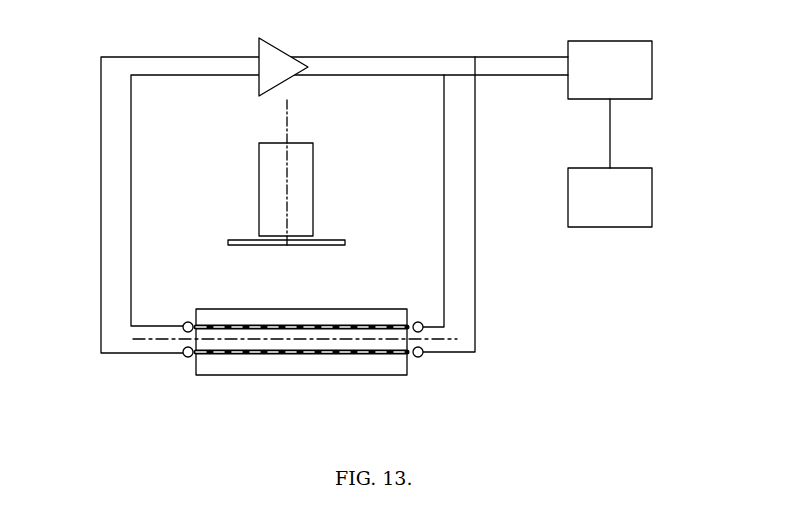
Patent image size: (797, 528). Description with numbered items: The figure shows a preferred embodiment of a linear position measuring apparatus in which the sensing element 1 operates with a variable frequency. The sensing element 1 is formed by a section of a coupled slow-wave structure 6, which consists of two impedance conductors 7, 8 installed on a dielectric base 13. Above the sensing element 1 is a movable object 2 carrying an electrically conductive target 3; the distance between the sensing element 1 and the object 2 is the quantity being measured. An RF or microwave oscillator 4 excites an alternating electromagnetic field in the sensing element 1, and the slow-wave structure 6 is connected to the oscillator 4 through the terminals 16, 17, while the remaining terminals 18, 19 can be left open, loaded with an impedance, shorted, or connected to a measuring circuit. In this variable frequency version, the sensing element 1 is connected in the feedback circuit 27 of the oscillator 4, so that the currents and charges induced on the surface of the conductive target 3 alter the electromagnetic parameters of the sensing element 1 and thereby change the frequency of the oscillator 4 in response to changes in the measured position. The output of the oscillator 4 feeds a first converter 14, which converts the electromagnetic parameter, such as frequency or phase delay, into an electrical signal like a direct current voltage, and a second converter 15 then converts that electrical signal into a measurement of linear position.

The sensing element 1 is at (304, 350).
The movable object 2 is at (313, 165).
The conductive target 3 is at (240, 241).
The oscillator 4 is at (305, 41).
The coupled slow-wave structure 6 is at (277, 370).
The impedance conductor 7 is at (280, 326).
The impedance conductor 8 is at (252, 355).
The dielectric base 13 is at (230, 338).
The first converter 14 is at (652, 79).
The second converter 15 is at (648, 207).
The terminal 16 is at (184, 323).
The terminal 17 is at (186, 357).
The terminal 18 is at (413, 321).
The terminal 19 is at (424, 357).
The feedback circuit 27 is at (118, 188).